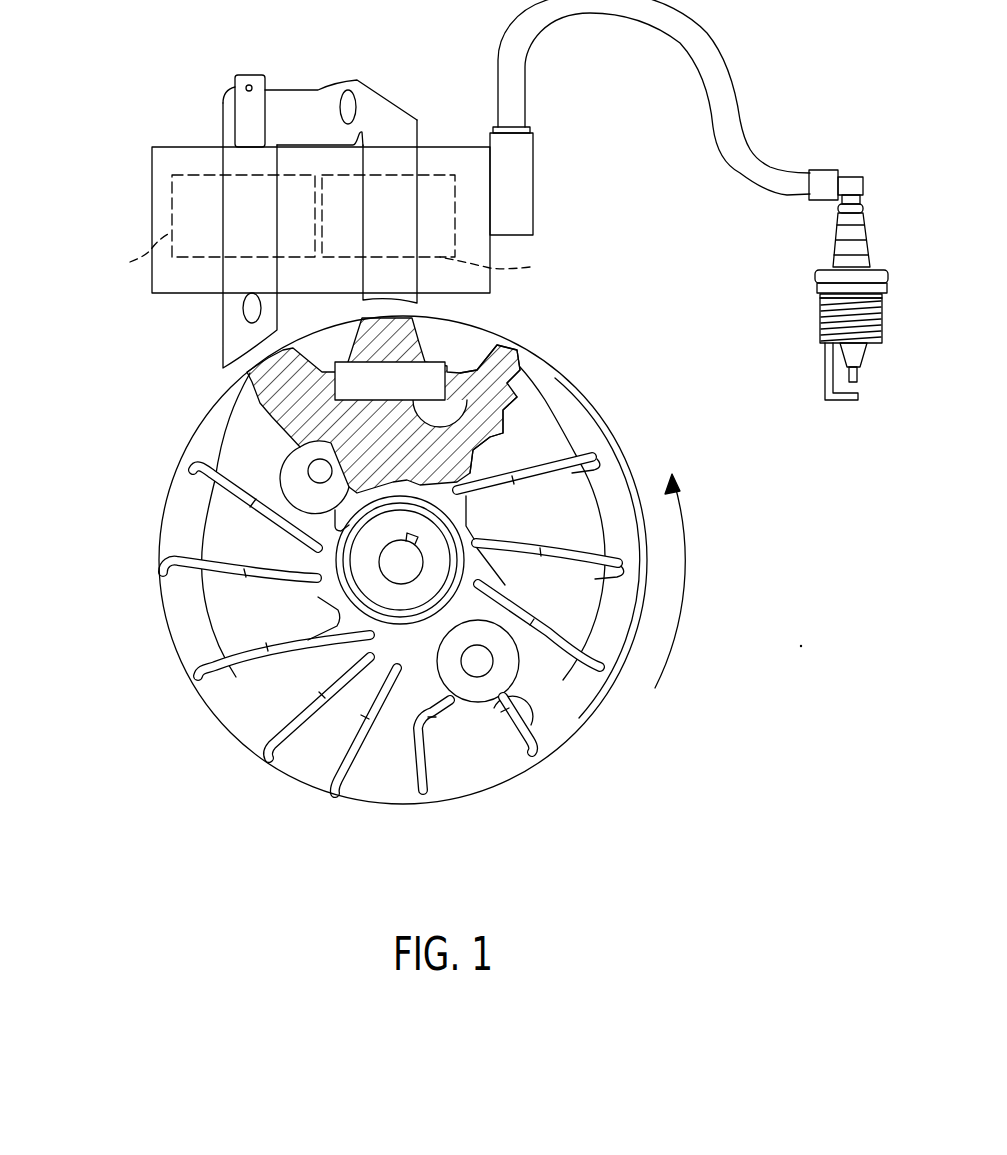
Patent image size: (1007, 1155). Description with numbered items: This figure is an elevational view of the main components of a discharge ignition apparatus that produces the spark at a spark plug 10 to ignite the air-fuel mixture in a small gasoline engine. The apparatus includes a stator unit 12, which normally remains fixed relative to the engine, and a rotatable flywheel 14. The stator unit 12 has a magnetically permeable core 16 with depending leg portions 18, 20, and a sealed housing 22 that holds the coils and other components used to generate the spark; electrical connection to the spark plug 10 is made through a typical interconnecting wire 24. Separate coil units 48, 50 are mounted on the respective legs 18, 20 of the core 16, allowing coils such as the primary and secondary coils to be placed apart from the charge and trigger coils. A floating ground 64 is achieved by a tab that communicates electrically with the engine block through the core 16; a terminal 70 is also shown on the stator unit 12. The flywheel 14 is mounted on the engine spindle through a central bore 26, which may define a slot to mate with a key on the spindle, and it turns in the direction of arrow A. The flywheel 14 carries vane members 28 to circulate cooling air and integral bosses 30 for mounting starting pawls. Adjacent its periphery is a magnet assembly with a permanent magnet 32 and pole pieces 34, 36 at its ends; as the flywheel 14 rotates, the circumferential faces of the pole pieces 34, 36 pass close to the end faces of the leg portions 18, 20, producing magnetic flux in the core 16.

The spark plug 10 is at (848, 260).
The stator unit 12 is at (192, 100).
The flywheel 14 is at (128, 621).
The magnetically permeable core 16 is at (385, 101).
The leg portion 18 is at (223, 315).
The leg portion 20 is at (420, 137).
The sealed housing 22 is at (152, 170).
The interconnecting wire 24 is at (712, 75).
The central bore 26 is at (420, 568).
The vane members 28 is at (216, 476).
The integral bosses 30 is at (282, 452).
The permanent magnet 32 is at (463, 428).
The pole piece 34 is at (333, 403).
The pole piece 36 is at (520, 352).
The coil unit 48 is at (133, 253).
The coil unit 50 is at (501, 266).
The floating ground 64 is at (357, 145).
The terminal 70 is at (266, 80).
The arrow A is at (690, 560).